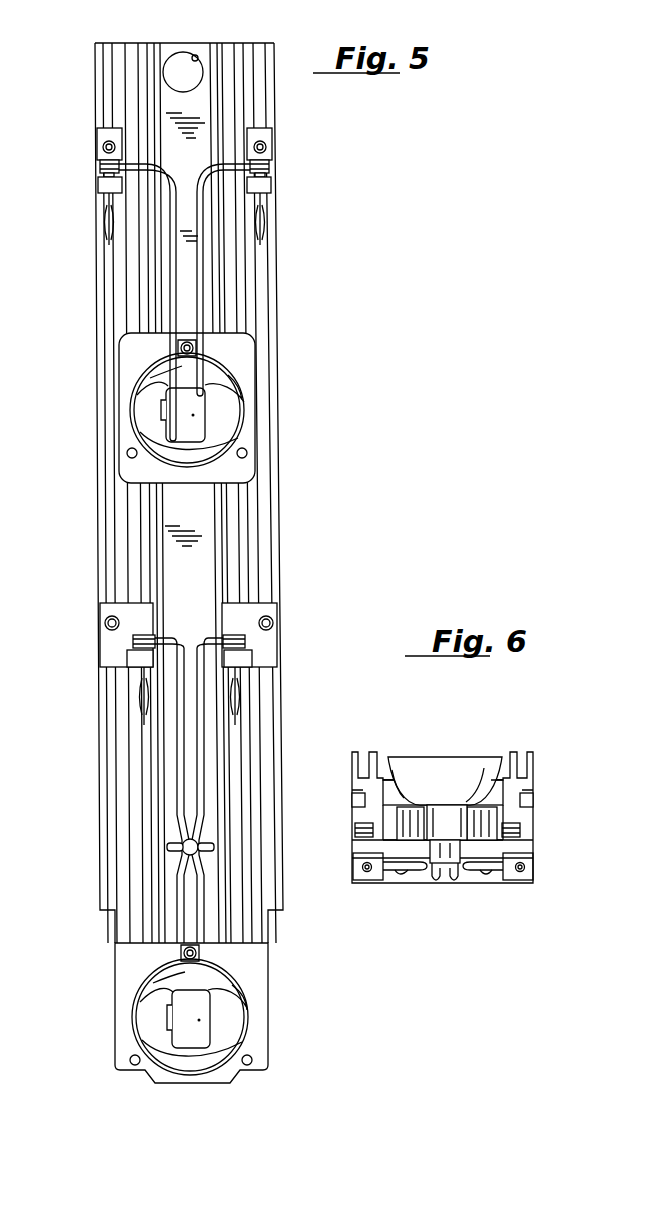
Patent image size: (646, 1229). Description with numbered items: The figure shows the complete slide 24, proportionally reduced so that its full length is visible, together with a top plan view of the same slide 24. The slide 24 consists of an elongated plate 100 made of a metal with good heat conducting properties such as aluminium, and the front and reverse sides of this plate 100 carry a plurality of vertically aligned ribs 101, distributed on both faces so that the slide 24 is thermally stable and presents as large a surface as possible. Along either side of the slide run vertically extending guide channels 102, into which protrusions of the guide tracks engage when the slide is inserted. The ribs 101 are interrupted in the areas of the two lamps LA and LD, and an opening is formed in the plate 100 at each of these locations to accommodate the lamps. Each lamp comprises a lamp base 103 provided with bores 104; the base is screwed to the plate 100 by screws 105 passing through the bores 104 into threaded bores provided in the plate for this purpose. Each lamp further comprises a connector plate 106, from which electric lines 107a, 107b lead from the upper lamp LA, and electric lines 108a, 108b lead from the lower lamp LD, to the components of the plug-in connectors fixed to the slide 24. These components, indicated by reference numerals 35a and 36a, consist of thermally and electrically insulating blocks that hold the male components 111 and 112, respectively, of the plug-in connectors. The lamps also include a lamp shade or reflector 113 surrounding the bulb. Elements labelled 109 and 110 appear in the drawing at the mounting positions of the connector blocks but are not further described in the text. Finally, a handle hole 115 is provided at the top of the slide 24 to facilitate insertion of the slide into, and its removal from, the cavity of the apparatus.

In FIG. 5, the ribs 101 is at (157, 43).
In FIG. 6, the ribs 101 is at (352, 775).
In FIG. 5, the handle hole 115 is at (196, 57).
In FIG. 5, the upper mounting bracket 109 is at (97, 134).
In FIG. 5, the plug-in connector component 35a is at (282, 168).
In FIG. 5, the male component 111 is at (106, 222).
In FIG. 5, the electric line 107a is at (172, 300).
In FIG. 5, the electric line 107b is at (206, 300).
In FIG. 5, the slide 24 is at (282, 365).
In FIG. 6, the slide 24 is at (497, 890).
In FIG. 5, the lamp base 103 is at (160, 410).
In FIG. 6, the lamp base 103 is at (445, 781).
In FIG. 5, the connector plate 106 is at (205, 397).
In FIG. 6, the connector plate 106 is at (447, 860).
In FIG. 5, the lamp LA is at (236, 417).
In FIG. 6, the lamp LA is at (447, 767).
In FIG. 5, the lamp shade or reflector 113 is at (163, 425).
In FIG. 6, the lamp shade or reflector 113 is at (433, 783).
In FIG. 5, the bores 104 is at (129, 454).
In FIG. 5, the screws 105 is at (242, 453).
In FIG. 5, the elongated plate 100 is at (198, 593).
In FIG. 5, the lower mounting bracket 110 is at (100, 612).
In FIG. 5, the plug-in connector component 36a is at (283, 640).
In FIG. 5, the male component 112 is at (141, 694).
In FIG. 5, the electric line 108a is at (177, 956).
In FIG. 5, the electric line 108b is at (186, 962).
In FIG. 5, the lamp LD is at (234, 1017).
In FIG. 6, the guide channels 102 is at (360, 808).